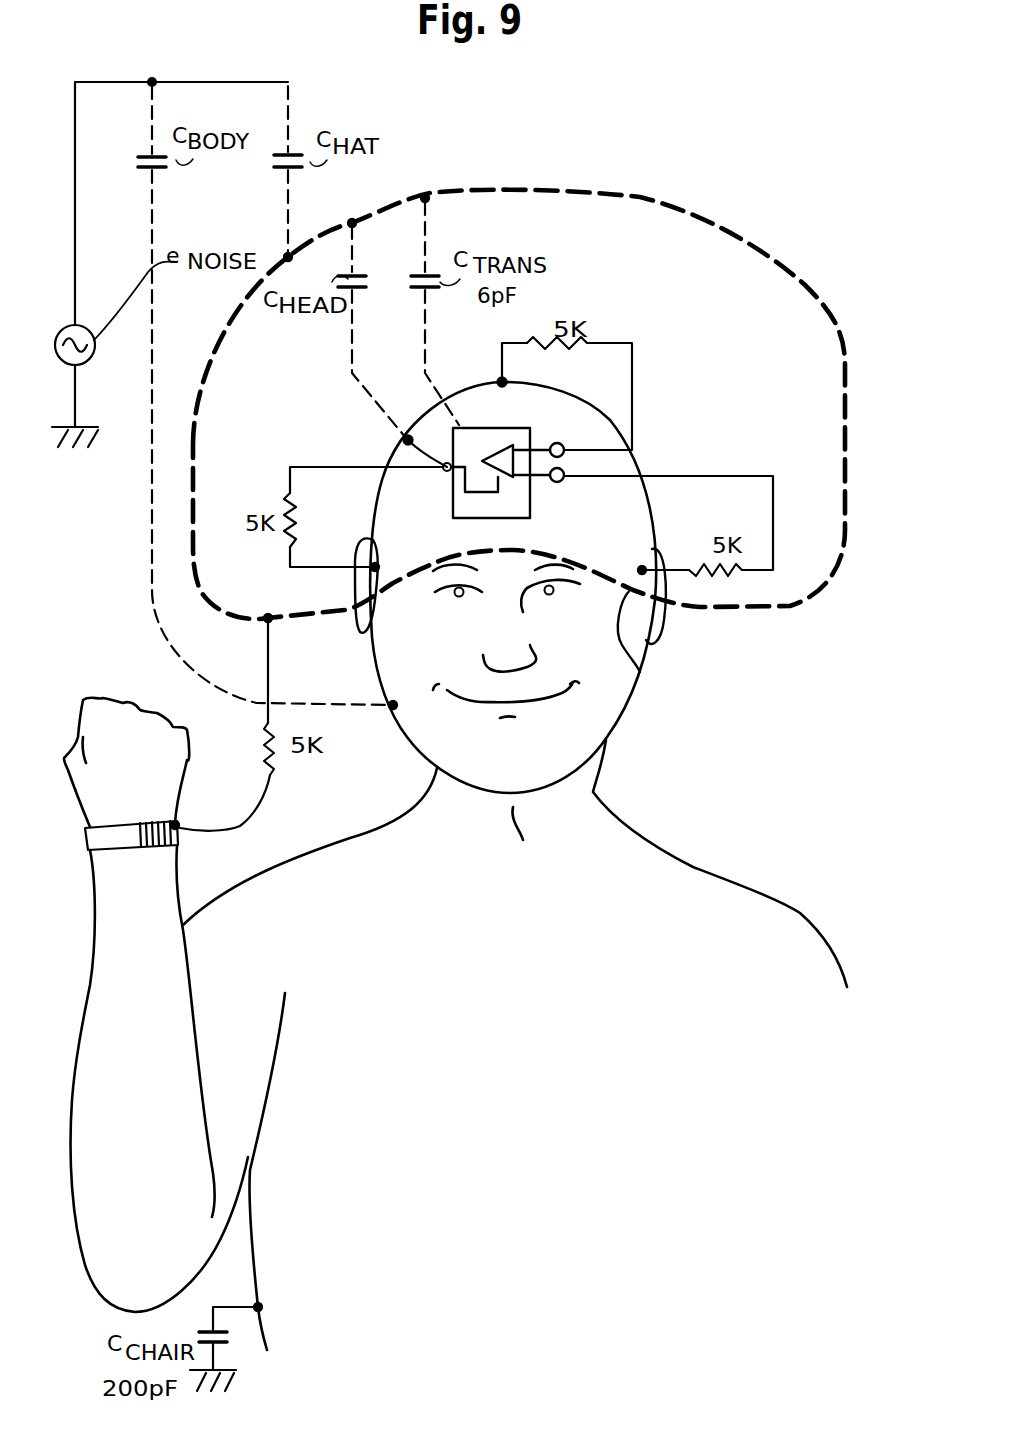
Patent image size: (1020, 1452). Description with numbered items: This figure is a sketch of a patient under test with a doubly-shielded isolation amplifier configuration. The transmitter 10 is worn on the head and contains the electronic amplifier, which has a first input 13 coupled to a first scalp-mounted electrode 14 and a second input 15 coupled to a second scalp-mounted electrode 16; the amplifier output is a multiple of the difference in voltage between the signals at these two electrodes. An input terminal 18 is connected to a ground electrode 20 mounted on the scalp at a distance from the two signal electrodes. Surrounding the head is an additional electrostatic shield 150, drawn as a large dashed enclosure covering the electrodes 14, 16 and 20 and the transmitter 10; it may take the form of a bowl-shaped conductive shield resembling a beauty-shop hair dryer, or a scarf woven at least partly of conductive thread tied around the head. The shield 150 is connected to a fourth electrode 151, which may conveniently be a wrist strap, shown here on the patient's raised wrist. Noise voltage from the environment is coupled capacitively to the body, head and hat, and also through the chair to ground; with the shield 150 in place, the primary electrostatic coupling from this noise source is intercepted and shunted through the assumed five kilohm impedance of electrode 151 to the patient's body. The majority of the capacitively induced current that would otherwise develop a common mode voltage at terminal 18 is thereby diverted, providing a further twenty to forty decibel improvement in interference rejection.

The transmitter 10 is at (566, 433).
The first input 13 is at (568, 472).
The first scalp-mounted electrode 14 is at (640, 668).
The second input 15 is at (563, 444).
The second scalp-mounted electrode 16 is at (501, 380).
The input terminal 18 is at (406, 441).
The ground electrode 20 is at (377, 550).
The additional electrostatic shield 150 is at (838, 562).
The fourth electrode 151 is at (178, 824).